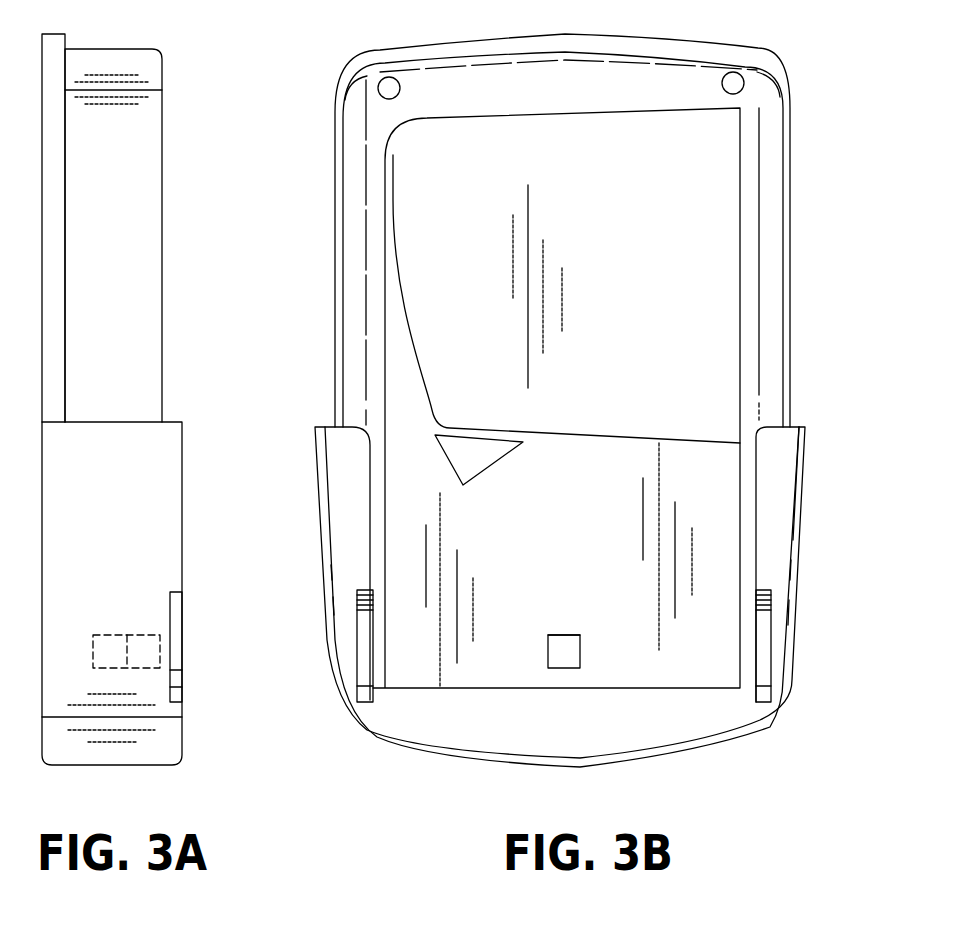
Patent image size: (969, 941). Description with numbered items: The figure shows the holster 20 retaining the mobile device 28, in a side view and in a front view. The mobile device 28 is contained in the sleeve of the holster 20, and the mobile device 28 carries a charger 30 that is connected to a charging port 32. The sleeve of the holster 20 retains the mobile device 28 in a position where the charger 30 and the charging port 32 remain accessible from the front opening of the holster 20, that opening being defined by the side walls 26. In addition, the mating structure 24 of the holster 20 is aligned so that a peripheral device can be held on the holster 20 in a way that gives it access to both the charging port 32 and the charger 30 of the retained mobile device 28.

In FIG. 3A, the holster 20 is at (165, 472).
In FIG. 3B, the holster 20 is at (783, 467).
In FIG. 3A, the mating structure 24 is at (182, 672).
In FIG. 3B, the mating structure 24 is at (763, 672).
In FIG. 3B, the side walls 26 is at (800, 522).
In FIG. 3A, the mobile device 28 is at (152, 213).
In FIG. 3B, the mobile device 28 is at (718, 232).
In FIG. 3A, the charger 30 is at (110, 643).
In FIG. 3B, the charger 30 is at (573, 633).
In FIG. 3A, the charging port 32 is at (147, 650).
In FIG. 3B, the charging port 32 is at (578, 647).